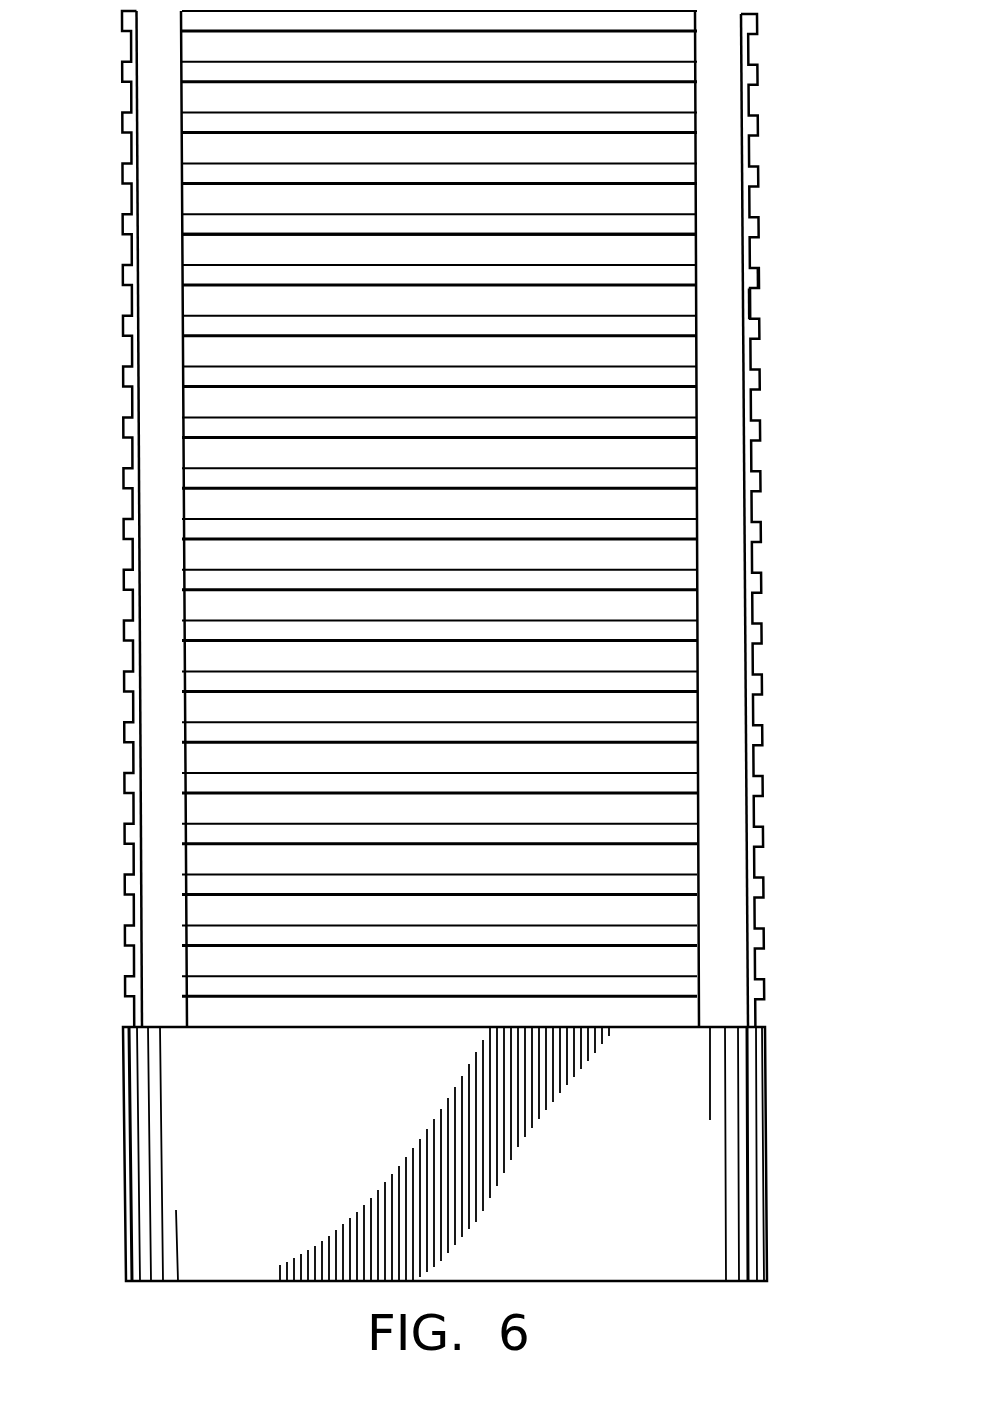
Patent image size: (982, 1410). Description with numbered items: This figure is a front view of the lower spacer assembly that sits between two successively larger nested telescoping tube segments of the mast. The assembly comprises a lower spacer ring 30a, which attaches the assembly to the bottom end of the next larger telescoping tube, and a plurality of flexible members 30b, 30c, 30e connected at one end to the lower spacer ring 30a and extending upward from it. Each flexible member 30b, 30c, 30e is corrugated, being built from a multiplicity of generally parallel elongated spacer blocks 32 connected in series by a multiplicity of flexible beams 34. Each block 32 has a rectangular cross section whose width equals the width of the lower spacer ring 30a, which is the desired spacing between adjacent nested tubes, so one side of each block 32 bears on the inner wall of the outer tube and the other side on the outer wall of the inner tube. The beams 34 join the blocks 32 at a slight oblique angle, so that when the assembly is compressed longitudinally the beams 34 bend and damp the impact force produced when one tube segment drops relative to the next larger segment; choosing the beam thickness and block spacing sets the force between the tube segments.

The lower spacer ring 30a is at (765, 1127).
The flexible member 30b is at (716, 505).
The flexible member 30c is at (770, 657).
The flexible member 30e is at (118, 599).
The spacer block 32 is at (574, 222).
The flexible beam 34 is at (660, 254).